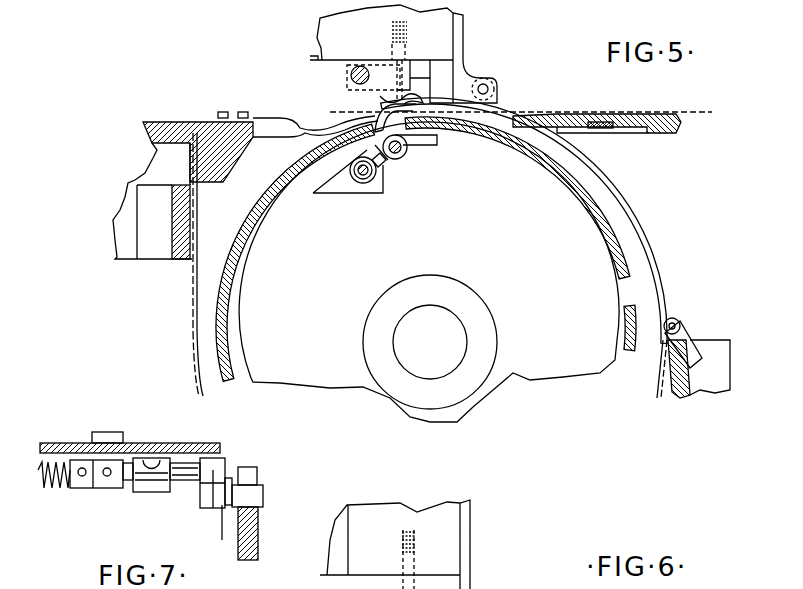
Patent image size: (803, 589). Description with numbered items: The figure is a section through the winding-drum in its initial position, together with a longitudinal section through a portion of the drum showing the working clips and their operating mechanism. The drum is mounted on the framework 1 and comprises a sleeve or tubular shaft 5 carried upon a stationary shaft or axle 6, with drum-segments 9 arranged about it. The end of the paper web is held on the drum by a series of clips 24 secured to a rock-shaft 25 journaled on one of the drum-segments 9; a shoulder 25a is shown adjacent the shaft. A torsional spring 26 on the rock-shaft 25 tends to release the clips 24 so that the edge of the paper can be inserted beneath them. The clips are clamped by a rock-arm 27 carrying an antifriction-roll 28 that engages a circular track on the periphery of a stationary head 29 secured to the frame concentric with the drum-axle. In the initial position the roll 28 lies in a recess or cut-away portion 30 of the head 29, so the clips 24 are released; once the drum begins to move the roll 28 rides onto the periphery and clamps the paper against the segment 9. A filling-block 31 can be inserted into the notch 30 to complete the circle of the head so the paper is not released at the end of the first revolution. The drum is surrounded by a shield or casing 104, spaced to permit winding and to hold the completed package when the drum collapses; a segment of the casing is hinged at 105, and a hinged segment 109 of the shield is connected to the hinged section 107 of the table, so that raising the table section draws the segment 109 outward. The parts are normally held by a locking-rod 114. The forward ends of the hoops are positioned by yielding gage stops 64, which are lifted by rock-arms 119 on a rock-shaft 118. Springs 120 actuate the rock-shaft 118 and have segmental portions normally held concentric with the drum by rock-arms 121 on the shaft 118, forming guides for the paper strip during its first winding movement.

In FIG. 5, the framework 1 is at (124, 225).
In FIG. 5, the sleeve or tubular shaft 5 is at (486, 315).
In FIG. 5, the stationary shaft or axle 6 is at (441, 318).
In FIG. 5, the drum-segments 9 is at (570, 183).
In FIG. 7, the drum-segments 9 is at (150, 440).
In FIG. 5, the clips 24 is at (376, 113).
In FIG. 7, the clips 24 is at (103, 437).
In FIG. 5, the rock-shaft 25 is at (401, 157).
In FIG. 7, the rock-shaft 25 is at (190, 475).
In FIG. 5, the shoulder 25a is at (430, 140).
In FIG. 7, the shoulder 25a is at (150, 473).
In FIG. 7, the torsional spring 26 is at (58, 492).
In FIG. 5, the rock-arm 27 is at (384, 160).
In FIG. 7, the rock-arm 27 is at (221, 488).
In FIG. 5, the antifriction-roll 28 is at (350, 170).
In FIG. 7, the antifriction-roll 28 is at (264, 493).
In FIG. 5, the head 29 is at (334, 364).
In FIG. 7, the head 29 is at (254, 540).
In FIG. 5, the recess or cut-away portion 30 is at (325, 199).
In FIG. 5, the filling-block 31 is at (383, 188).
In FIG. 5, the yielding gage stops 64 is at (400, 103).
In FIG. 6, the yielding gage stops 64 is at (450, 588).
In FIG. 5, the shield or casing 104 is at (192, 297).
In FIG. 5, the hinge 105 is at (678, 320).
In FIG. 5, the hinged section 107 is at (660, 135).
In FIG. 5, the hinged segment 109 is at (650, 233).
In FIG. 5, the locking-rod 114 is at (609, 124).
In FIG. 5, the rock-shaft 118 is at (350, 74).
In FIG. 5, the rock-arms 119 is at (388, 65).
In FIG. 6, the rock-arms 119 is at (388, 585).
In FIG. 5, the springs 120 is at (298, 136).
In FIG. 5, the rock-arms 121 is at (381, 100).